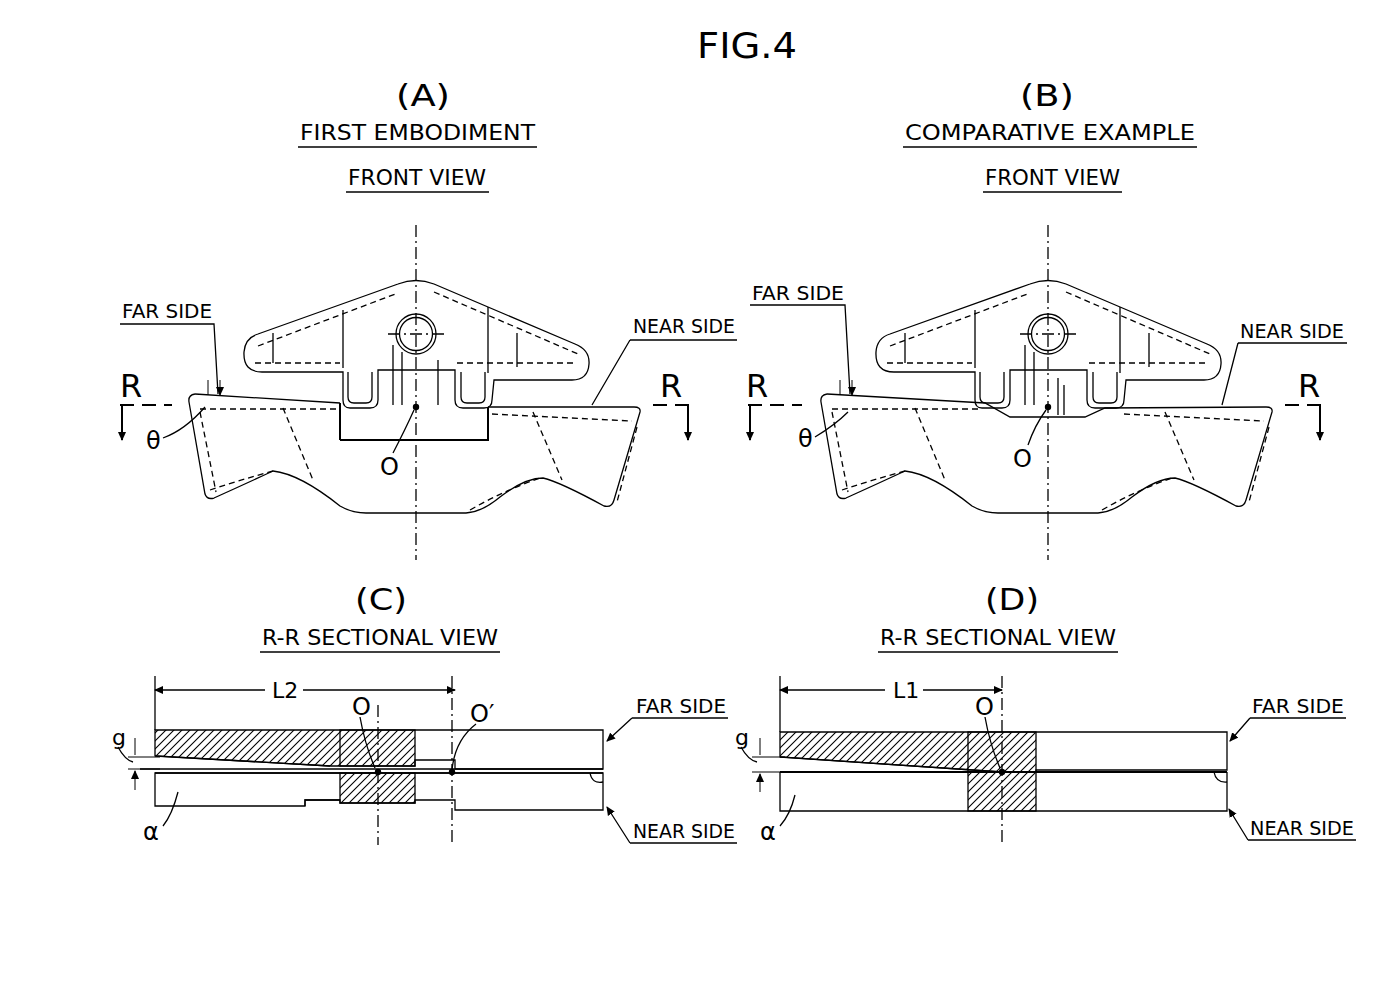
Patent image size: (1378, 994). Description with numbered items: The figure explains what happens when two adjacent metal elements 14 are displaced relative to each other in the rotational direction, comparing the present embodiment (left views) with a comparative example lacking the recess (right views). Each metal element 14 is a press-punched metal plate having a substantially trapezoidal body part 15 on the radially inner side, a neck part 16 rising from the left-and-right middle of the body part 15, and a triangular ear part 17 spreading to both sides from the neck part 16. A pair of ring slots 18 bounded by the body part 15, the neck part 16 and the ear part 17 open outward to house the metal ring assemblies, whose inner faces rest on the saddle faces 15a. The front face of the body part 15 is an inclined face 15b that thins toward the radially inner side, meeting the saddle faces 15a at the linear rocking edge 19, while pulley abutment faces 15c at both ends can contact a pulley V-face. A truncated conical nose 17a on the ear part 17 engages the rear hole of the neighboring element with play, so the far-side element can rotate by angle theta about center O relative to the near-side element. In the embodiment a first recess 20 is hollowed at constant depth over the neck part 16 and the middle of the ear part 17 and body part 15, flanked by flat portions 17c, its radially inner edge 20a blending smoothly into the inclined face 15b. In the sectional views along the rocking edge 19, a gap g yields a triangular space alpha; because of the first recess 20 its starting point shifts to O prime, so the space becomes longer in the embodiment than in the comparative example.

The metal element 14 is at (499, 288).
The body part 15 is at (569, 489).
The saddle face 15a is at (263, 400).
The inclined face 15b is at (470, 483).
The pulley abutment face 15c is at (200, 465).
The neck part 16 is at (438, 400).
The ear part 17 is at (322, 311).
The nose 17a is at (400, 328).
The flat portion 17c is at (292, 332).
The ring slot 18 is at (300, 387).
The rocking edge 19 is at (607, 780).
The first recess 20 is at (428, 392).
The radially inner edge 20a is at (350, 437).